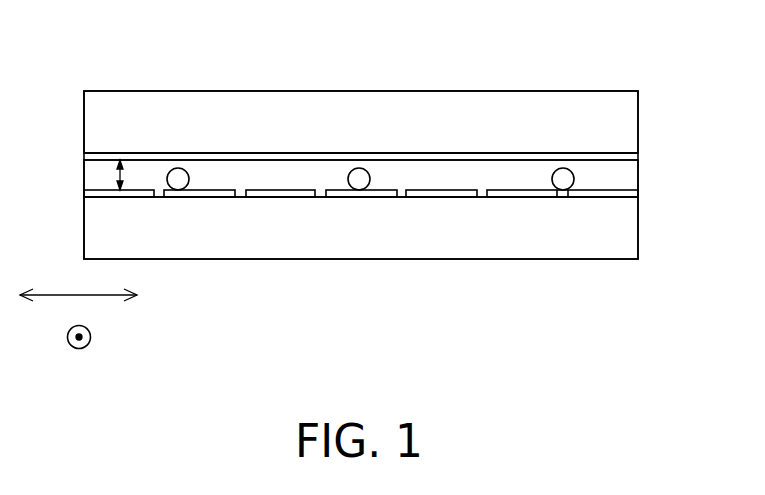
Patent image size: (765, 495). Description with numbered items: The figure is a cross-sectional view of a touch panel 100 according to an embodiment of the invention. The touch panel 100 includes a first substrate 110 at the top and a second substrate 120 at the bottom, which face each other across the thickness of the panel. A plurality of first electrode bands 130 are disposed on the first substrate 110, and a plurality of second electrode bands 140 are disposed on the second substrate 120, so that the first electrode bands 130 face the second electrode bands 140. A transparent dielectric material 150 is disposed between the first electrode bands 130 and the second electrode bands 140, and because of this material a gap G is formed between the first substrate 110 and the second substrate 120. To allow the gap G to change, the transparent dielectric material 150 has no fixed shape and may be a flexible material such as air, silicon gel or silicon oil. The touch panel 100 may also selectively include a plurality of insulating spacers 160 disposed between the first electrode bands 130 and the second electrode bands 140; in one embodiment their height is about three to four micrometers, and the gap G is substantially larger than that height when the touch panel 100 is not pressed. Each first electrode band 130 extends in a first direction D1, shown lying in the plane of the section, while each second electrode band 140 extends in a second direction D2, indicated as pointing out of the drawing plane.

The touch panel 100 is at (404, 176).
The first substrate 110 is at (613, 123).
The second substrate 120 is at (606, 228).
The first electrode bands 130 is at (627, 157).
The second electrode bands 140 is at (625, 194).
The transparent dielectric material 150 is at (623, 178).
The insulating spacers 160 is at (362, 180).
The gap G is at (121, 178).
The first direction D1 is at (93, 295).
The second direction D2 is at (98, 337).